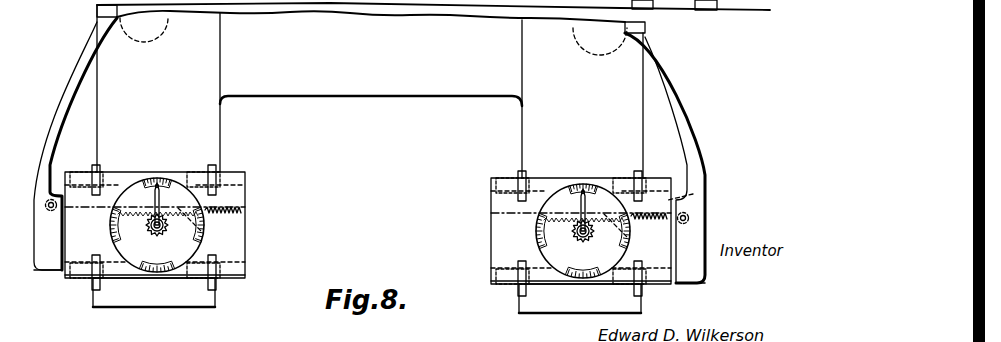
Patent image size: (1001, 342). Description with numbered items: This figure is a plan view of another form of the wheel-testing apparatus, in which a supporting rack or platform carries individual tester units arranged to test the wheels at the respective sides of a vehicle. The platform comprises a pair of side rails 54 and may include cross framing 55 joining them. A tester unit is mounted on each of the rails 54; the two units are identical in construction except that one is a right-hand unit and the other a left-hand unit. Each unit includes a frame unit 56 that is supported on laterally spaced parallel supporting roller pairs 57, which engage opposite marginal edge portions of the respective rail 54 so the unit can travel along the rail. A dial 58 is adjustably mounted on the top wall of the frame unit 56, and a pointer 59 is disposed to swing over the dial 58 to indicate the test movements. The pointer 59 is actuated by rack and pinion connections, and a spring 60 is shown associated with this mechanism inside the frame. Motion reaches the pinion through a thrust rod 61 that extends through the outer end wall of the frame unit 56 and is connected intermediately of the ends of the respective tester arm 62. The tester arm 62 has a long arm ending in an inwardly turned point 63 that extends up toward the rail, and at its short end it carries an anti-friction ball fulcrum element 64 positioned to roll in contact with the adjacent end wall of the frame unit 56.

The side rail 54 is at (220, 134).
The cross framing 55 is at (372, 88).
The frame unit 56 is at (143, 278).
The supporting roller pair 57 is at (99, 168).
The dial 58 is at (208, 246).
The pointer 59 is at (150, 195).
The spring 60 is at (203, 228).
The thrust rod 61 is at (105, 215).
The tester arm 62 is at (51, 198).
The inwardly turned point 63 is at (97, 21).
The anti-friction ball fulcrum element 64 is at (50, 262).